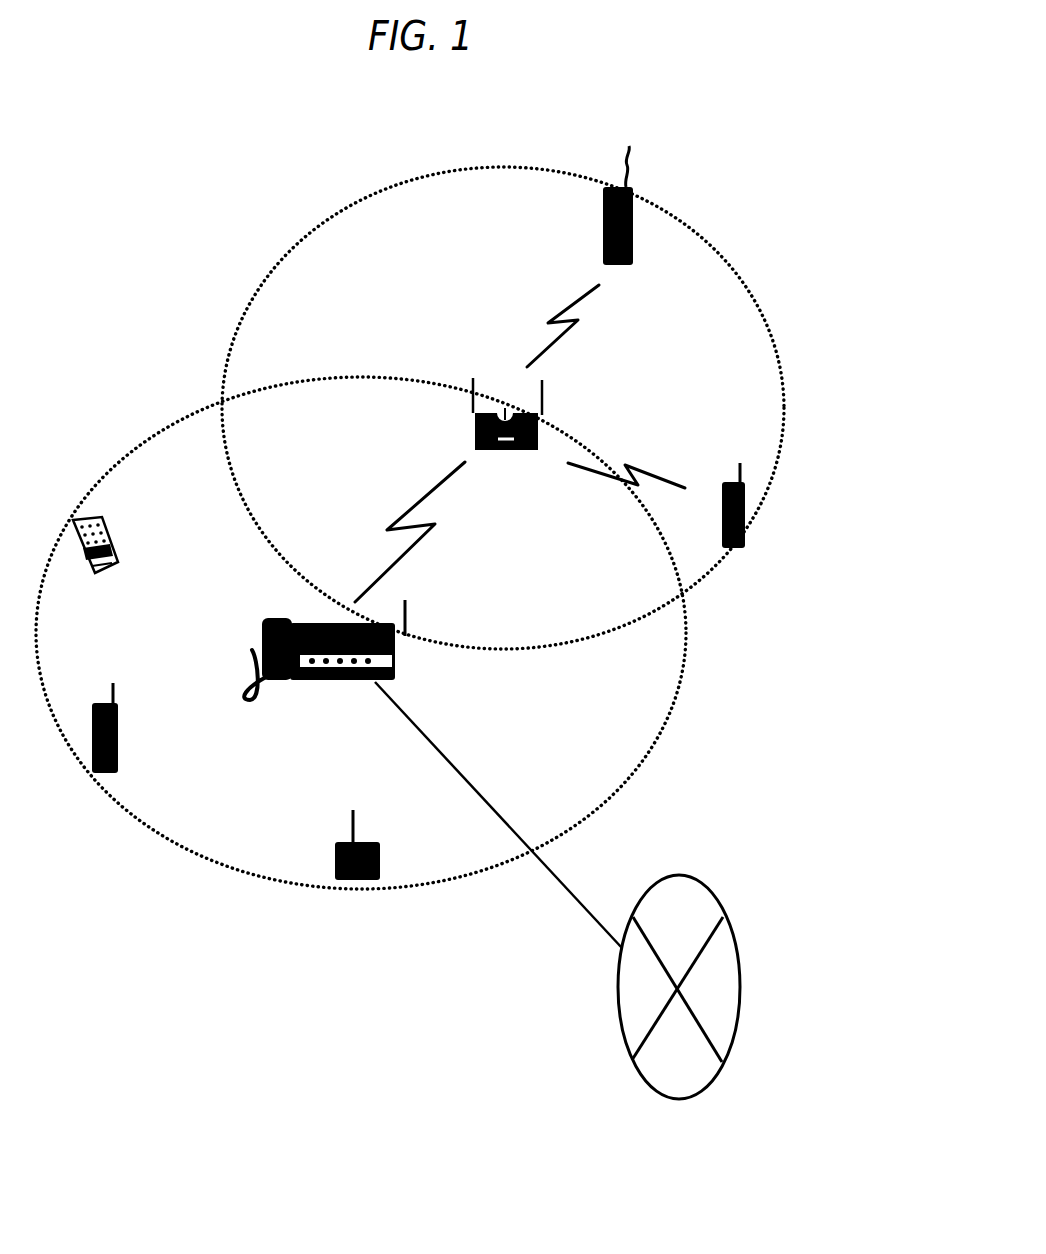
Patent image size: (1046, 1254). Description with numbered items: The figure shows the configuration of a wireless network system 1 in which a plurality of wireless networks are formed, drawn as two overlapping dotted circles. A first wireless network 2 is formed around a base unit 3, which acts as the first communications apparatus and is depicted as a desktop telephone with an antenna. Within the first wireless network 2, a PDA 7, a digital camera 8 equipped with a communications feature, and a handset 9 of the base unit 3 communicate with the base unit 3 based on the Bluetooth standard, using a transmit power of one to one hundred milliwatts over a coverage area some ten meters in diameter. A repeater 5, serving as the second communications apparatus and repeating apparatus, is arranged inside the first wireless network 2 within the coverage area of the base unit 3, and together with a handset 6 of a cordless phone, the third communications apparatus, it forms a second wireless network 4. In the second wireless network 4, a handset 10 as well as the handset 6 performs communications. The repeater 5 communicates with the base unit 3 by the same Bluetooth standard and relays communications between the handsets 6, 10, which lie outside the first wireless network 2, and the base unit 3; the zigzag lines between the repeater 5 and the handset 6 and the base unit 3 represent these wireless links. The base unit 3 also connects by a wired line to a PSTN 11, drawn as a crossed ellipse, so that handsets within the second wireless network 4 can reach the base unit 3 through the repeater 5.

The wireless network system 1 is at (695, 182).
The first wireless network 2 is at (148, 436).
The base unit 3 is at (268, 617).
The second wireless network 4 is at (500, 167).
The repeater 5 is at (539, 424).
The handset 6 is at (629, 146).
The PDA 7 is at (112, 537).
The digital camera 8 is at (380, 848).
The handset 9 is at (118, 748).
The handset 10 is at (745, 548).
The PSTN 11 is at (710, 888).